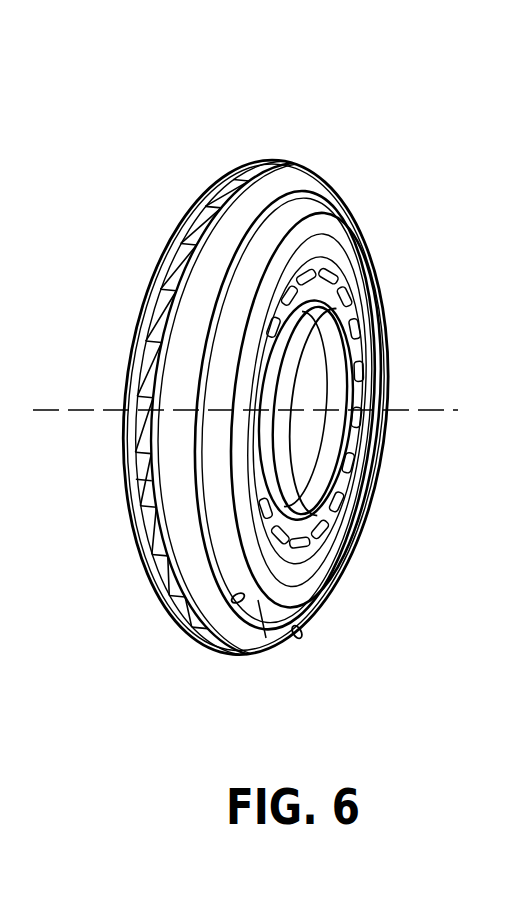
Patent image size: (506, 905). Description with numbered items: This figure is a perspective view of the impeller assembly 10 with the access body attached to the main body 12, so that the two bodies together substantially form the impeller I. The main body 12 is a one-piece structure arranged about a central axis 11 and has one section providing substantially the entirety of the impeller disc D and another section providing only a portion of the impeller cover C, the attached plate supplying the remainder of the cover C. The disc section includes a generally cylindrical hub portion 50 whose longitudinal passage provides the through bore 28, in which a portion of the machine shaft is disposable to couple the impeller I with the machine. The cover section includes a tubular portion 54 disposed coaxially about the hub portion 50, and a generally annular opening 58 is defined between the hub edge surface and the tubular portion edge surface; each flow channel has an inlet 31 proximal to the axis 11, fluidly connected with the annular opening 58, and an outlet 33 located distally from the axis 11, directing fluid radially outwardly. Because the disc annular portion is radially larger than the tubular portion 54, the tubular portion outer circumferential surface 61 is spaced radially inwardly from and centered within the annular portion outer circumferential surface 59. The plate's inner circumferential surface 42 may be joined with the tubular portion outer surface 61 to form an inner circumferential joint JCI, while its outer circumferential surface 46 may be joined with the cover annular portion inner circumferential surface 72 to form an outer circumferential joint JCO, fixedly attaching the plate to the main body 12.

The impeller assembly 10 is at (333, 122).
The central axis 11 is at (447, 411).
The main body 12 is at (371, 286).
The through bore 28 is at (327, 444).
The inlet 31 is at (352, 370).
The outlet 33 is at (158, 292).
The inner circumferential edge surface 42 is at (238, 608).
The outer circumferential edge surface 46 is at (320, 618).
The hub portion 50 is at (352, 331).
The tubular portion 54 is at (290, 238).
The annular opening 58 is at (353, 483).
The annular portion outer circumferential surface 59 is at (128, 515).
The tubular portion outer circumferential surface 61 is at (263, 617).
The cover annular portion inner circumferential edge surface 72 is at (293, 636).
The impeller I is at (170, 116).
The impeller disc D is at (150, 201).
The impeller cover C is at (370, 202).
The inner circumferential joint JCI is at (197, 448).
The outer circumferential joint JCO is at (148, 480).